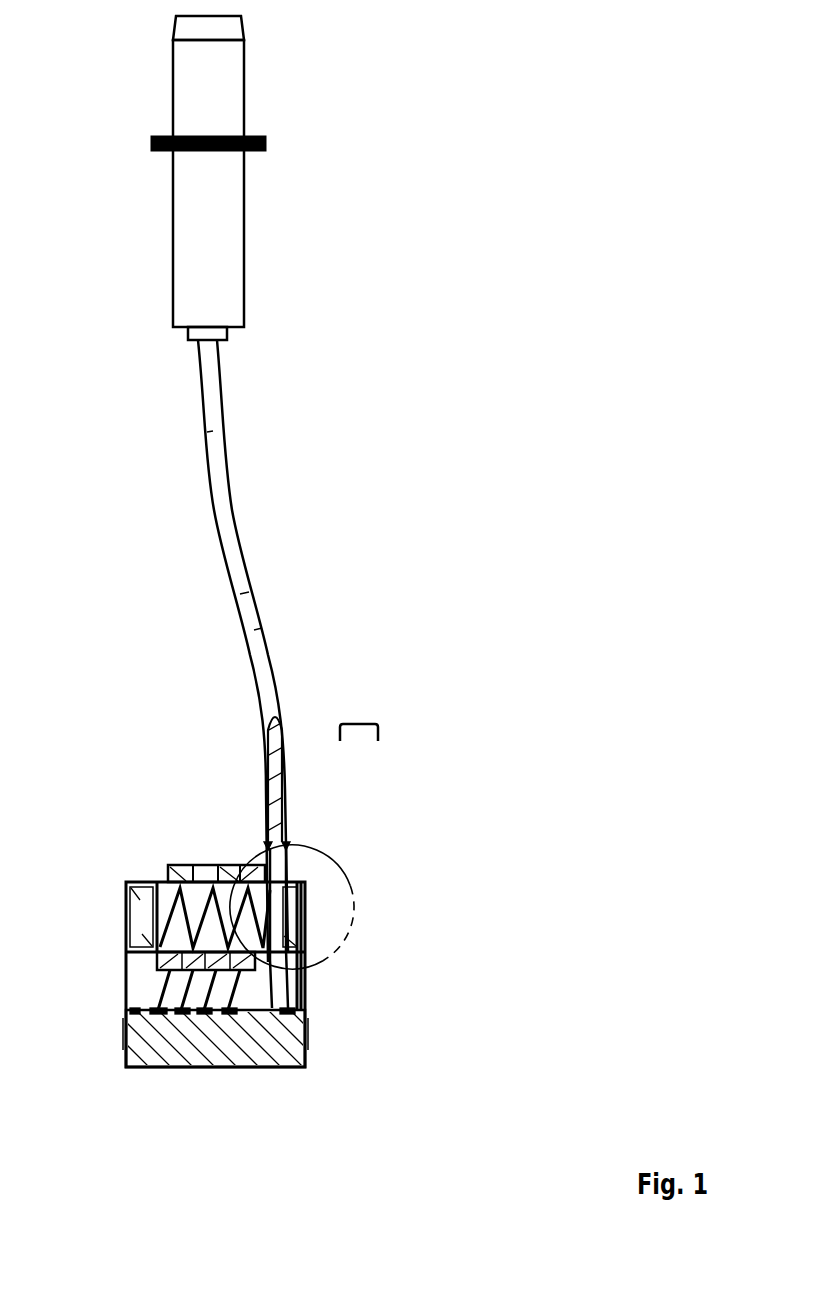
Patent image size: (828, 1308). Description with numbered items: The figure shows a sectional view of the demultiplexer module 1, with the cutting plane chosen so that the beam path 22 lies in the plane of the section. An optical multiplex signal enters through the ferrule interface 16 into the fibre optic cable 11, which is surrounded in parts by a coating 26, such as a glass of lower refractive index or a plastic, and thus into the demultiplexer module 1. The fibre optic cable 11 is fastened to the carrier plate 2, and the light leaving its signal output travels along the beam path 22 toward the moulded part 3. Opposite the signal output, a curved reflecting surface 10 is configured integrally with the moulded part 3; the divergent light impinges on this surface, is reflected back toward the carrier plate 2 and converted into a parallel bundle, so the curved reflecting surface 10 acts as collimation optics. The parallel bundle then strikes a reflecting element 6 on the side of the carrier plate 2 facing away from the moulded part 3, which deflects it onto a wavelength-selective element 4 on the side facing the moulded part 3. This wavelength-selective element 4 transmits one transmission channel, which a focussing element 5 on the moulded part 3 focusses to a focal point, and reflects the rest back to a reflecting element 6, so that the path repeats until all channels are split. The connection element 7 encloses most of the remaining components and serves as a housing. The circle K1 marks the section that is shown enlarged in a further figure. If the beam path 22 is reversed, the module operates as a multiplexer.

The demultiplexer module 1 is at (400, 419).
The carrier plate 2 is at (158, 886).
The moulded part 3 is at (193, 1033).
The wavelength-selective element 4 is at (245, 1035).
The focussing element 5 is at (242, 972).
The reflecting element 6 is at (258, 872).
The connection element 7 is at (137, 1020).
The curved reflecting surface 10 is at (265, 1015).
The fibre optic cable 11 is at (165, 651).
The ferrule interface 16 is at (220, 227).
The beam path 22 is at (283, 960).
The coating 26 is at (222, 500).
The circle K1 is at (335, 856).